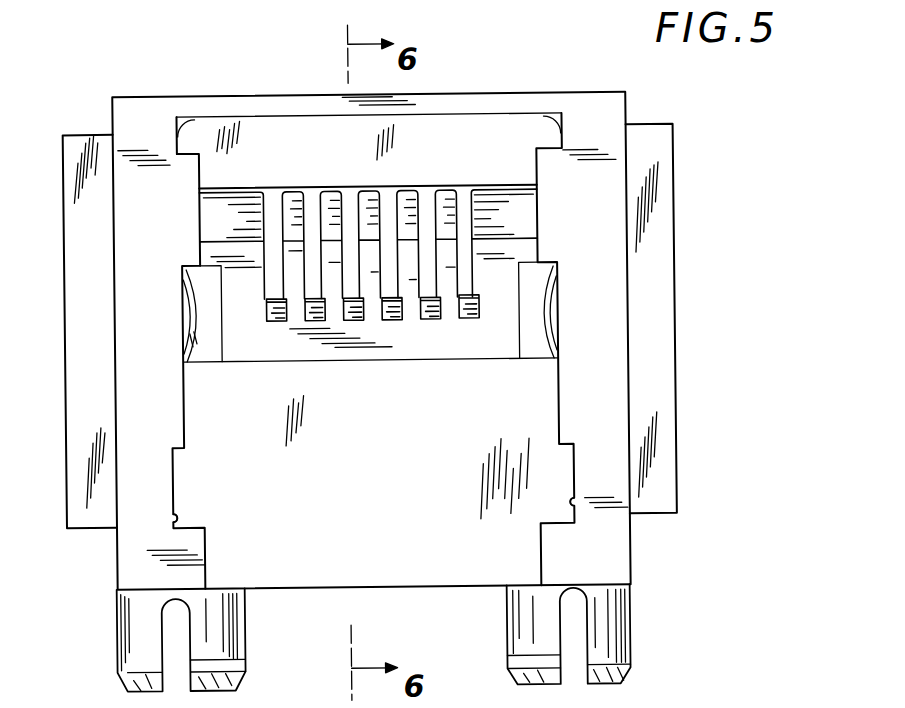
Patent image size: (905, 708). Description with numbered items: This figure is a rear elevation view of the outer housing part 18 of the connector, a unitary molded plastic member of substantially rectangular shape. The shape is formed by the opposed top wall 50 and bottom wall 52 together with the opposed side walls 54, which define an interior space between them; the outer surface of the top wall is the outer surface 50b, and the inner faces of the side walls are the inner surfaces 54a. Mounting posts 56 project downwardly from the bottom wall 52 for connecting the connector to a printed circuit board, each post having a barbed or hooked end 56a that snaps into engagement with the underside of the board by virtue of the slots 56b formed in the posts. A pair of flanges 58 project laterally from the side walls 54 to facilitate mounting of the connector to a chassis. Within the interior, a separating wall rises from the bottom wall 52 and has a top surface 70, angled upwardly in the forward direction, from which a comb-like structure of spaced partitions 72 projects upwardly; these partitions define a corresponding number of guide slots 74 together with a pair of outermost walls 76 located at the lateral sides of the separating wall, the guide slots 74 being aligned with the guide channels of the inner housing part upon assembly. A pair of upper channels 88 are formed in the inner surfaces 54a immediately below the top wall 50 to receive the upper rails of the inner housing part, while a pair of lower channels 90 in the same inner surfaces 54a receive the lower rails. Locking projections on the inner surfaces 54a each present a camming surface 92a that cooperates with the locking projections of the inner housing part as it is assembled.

The outer housing part 18 is at (698, 289).
The top wall 50 is at (520, 90).
The outer surface of top wall 50b is at (306, 96).
The bottom wall 52 is at (469, 598).
The side walls 54 is at (110, 402).
The inner surface of side wall 54a is at (186, 407).
The mounting post 56 is at (124, 637).
The barbed or hooked end 56a is at (240, 657).
The slot 56b is at (173, 655).
The flange 58 is at (80, 482).
The top surface of wall 70 is at (392, 322).
The partition 72 is at (448, 197).
The guide slot 74 is at (350, 200).
The outermost wall 76 is at (243, 197).
The upper channel 88 is at (193, 118).
The lower channel 90 is at (172, 520).
The camming surface 92a is at (183, 310).